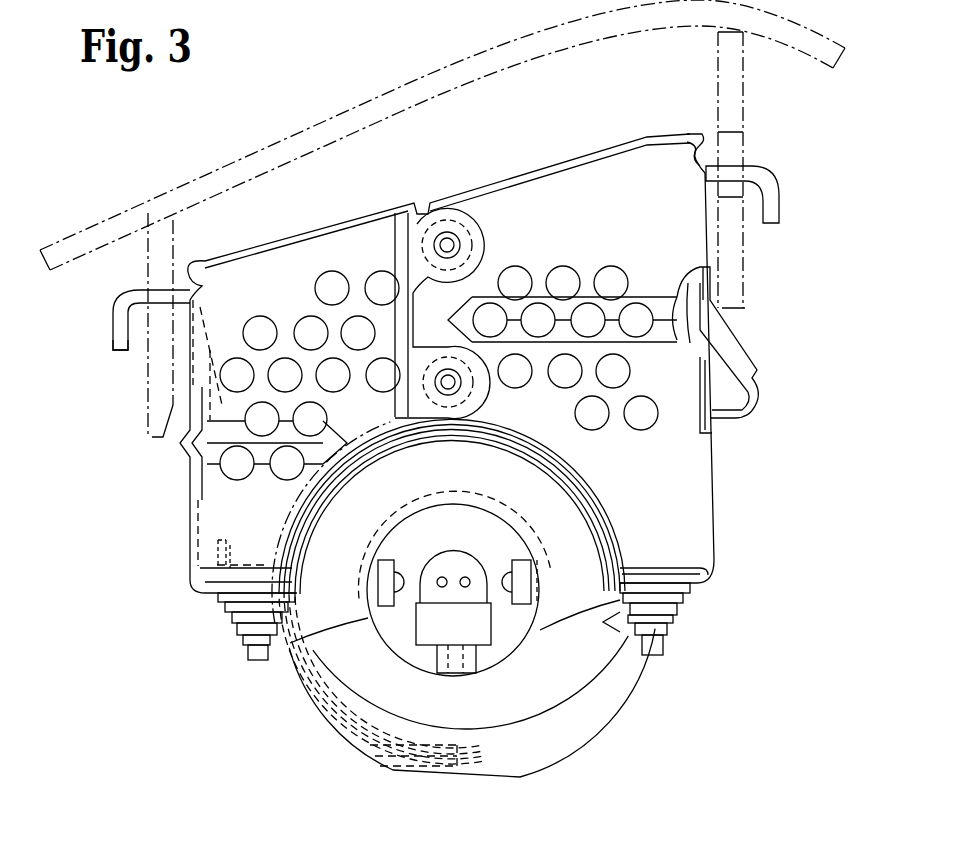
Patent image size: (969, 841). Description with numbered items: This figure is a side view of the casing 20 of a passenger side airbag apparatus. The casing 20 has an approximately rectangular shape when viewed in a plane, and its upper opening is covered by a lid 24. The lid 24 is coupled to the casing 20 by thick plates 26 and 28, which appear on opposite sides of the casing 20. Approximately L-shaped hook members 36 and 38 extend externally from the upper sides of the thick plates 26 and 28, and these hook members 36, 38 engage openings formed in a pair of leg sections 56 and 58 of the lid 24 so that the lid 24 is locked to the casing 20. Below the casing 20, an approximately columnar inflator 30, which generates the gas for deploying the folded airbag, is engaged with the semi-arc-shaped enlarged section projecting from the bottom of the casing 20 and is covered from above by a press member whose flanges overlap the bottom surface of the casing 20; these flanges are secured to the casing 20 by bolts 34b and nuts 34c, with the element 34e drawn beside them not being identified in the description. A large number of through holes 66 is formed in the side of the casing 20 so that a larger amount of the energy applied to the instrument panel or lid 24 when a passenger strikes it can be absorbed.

The casing 20 is at (696, 468).
The lid 24 is at (337, 110).
The thick plate 26 is at (738, 358).
The thick plate 28 is at (108, 347).
The inflator 30 is at (512, 641).
The bolt 34b is at (670, 636).
The nut 34c is at (232, 620).
The leg portion 34e is at (240, 640).
The hook member 36 is at (768, 203).
The hook member 38 is at (116, 303).
The leg section 56 is at (745, 77).
The leg section 58 is at (180, 231).
The through holes 66 is at (607, 278).